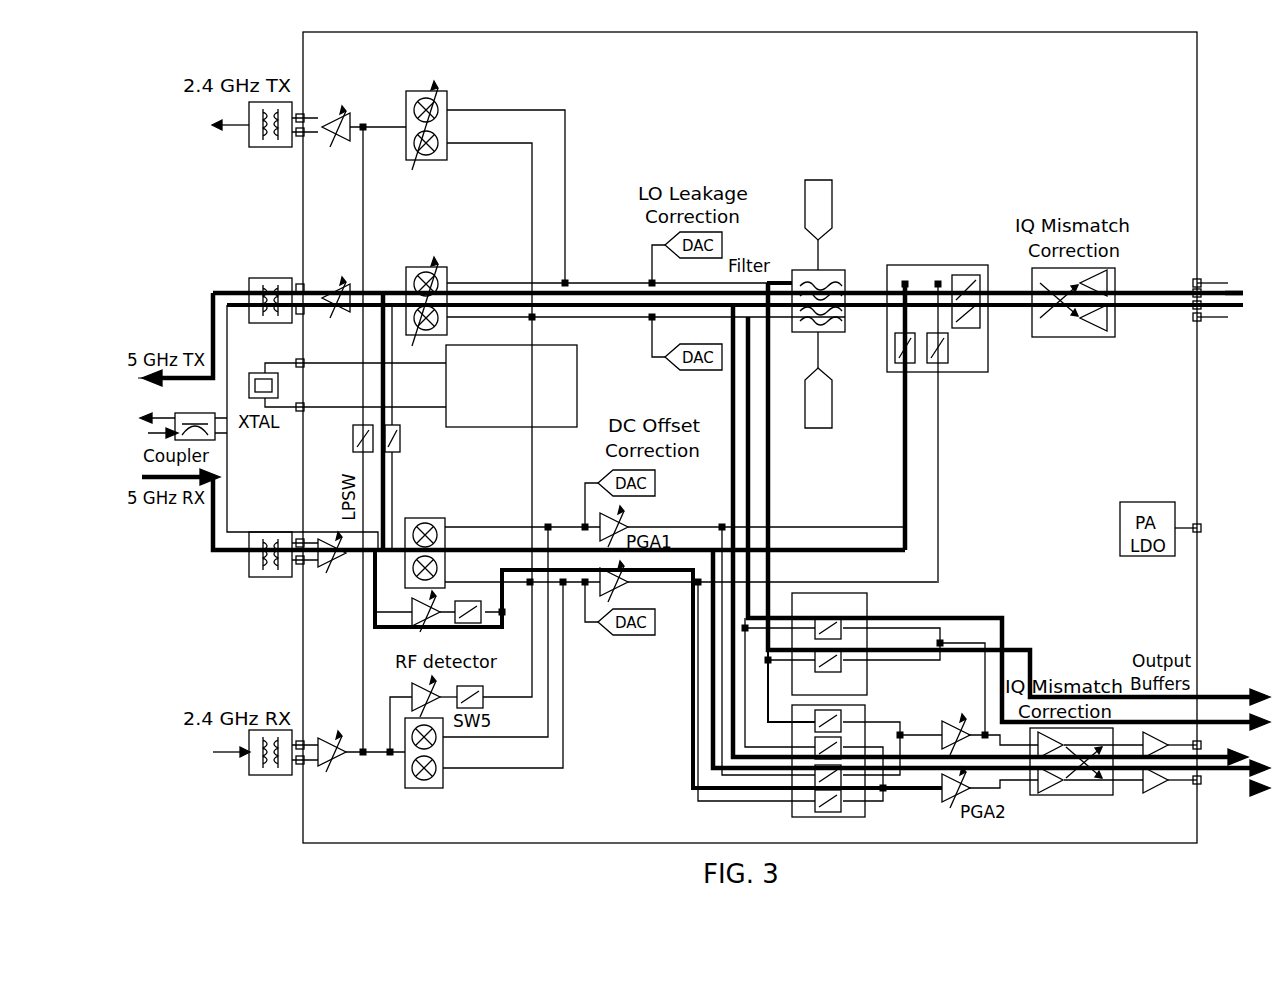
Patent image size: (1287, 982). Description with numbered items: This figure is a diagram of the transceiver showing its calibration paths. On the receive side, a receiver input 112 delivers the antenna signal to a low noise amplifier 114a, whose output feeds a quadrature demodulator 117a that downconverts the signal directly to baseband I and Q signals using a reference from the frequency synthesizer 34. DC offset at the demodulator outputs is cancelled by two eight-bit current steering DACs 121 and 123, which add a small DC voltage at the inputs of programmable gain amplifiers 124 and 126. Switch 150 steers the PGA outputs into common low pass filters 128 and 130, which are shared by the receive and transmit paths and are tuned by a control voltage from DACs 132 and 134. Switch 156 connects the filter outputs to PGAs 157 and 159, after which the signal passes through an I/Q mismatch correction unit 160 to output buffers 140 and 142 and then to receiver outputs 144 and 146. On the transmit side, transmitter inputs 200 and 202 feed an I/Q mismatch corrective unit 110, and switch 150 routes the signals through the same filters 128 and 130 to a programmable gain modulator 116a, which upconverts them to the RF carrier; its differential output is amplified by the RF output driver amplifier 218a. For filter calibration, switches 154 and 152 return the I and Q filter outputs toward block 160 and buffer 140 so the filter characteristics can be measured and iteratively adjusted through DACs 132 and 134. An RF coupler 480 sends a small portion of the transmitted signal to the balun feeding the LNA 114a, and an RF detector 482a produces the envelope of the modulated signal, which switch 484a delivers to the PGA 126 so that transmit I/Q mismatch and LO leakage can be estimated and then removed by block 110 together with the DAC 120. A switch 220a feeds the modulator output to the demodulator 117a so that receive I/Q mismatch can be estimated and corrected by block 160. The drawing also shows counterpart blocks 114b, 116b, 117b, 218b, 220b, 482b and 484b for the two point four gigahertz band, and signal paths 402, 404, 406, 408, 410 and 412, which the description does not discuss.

The receiver input 112 is at (160, 520).
The low noise amplifier 114a is at (330, 570).
The 2.4 GHz receive low noise amplifier 114b is at (330, 768).
The programmable gain modulator 116a is at (426, 265).
The 2.4 GHz up-conversion mixer 116b is at (426, 90).
The quadrature demodulator 117a is at (426, 516).
The 2.4 GHz down-conversion mixer 117b is at (425, 792).
The RF output driver amplifier 218a is at (345, 320).
The 2.4 GHz transmit power amplifier driver 218b is at (345, 144).
The switch 220a is at (353, 432).
The LO path switch 220b is at (400, 440).
The frequency synthesizer 34 is at (514, 428).
The DAC 120 is at (722, 245).
The DC offset correction DAC 121 is at (655, 483).
The DC offset correction DAC 123 is at (645, 636).
The programmable gain amplifier 124 is at (618, 520).
The programmable gain amplifier 126 is at (628, 585).
The low pass filter 128 is at (833, 268).
The low pass filter 130 is at (838, 334).
The DAC 132 is at (814, 179).
The DAC 134 is at (822, 399).
The switch 150 is at (964, 374).
The switch 152 is at (867, 614).
The switch 154 is at (867, 678).
The switch 156 is at (792, 809).
The programmable gain amplifier 157 is at (959, 719).
The programmable gain amplifier 159 is at (940, 798).
The I/Q mismatch correction unit 160 is at (1073, 796).
The I/Q mismatch corrective unit 110 is at (1073, 338).
The output buffer 140 is at (1154, 737).
The output buffer 142 is at (1155, 796).
The receiver output 144 is at (1206, 745).
The receiver output 146 is at (1204, 788).
The transmitter input 200 is at (1194, 280).
The transmitter input 202 is at (1194, 320).
The transmit signal path 402 is at (611, 290).
The receive signal path 404 is at (905, 480).
The baseband signal line 406 is at (1202, 280).
The baseband signal line 408 is at (1202, 320).
The baseband signal line 410 is at (1232, 308).
The baseband signal line 412 is at (1252, 282).
The RF coupler 480 is at (223, 406).
The RF detector 482a is at (416, 625).
The RF detector amplifier 482b is at (412, 688).
The switch 484a is at (470, 625).
The RF detector switch 484b is at (470, 685).